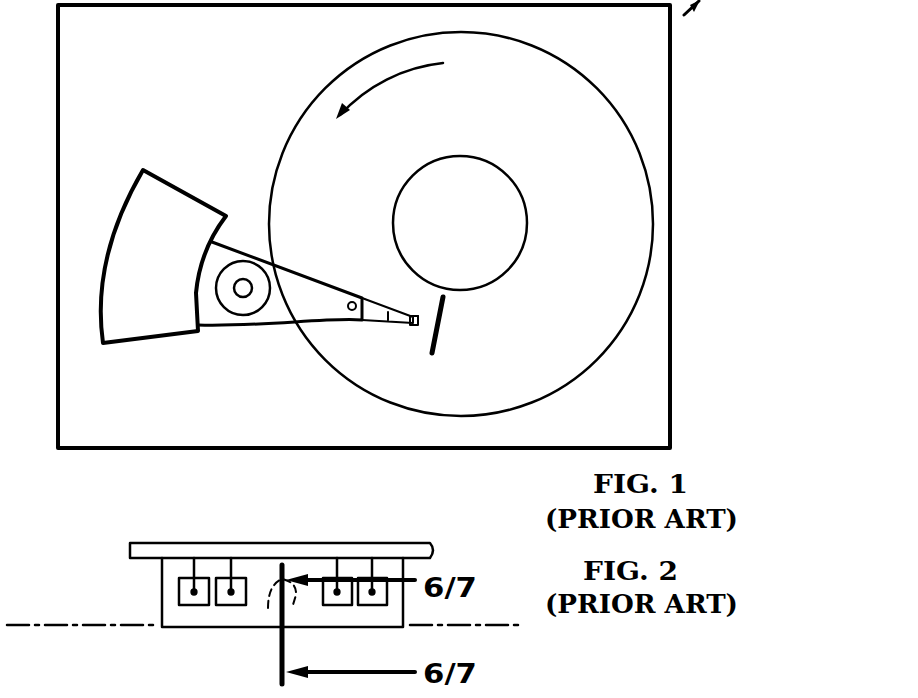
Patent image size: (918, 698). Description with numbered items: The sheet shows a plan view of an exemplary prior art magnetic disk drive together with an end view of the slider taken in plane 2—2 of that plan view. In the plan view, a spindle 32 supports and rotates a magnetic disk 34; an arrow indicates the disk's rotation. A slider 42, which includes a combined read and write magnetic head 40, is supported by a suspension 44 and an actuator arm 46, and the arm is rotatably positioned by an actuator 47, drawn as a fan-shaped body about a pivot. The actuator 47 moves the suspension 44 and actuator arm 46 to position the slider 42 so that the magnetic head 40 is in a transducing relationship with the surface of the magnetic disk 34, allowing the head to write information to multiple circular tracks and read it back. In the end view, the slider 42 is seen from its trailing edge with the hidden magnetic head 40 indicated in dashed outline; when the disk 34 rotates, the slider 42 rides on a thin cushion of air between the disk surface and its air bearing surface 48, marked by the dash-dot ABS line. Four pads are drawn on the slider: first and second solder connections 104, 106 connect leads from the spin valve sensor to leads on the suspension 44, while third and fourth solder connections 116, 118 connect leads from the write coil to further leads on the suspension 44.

In FIG. 1, the section line of FIG. 2 is at (456, 310).
In FIG. 1, the spindle 32 is at (483, 157).
In FIG. 1, the magnetic disk 34 is at (584, 223).
In FIG. 1, the magnetic head 40 is at (414, 326).
In FIG. 2, the magnetic head 40 is at (268, 608).
In FIG. 1, the slider 42 is at (413, 317).
In FIG. 2, the slider 42 is at (162, 587).
In FIG. 1, the suspension 44 is at (372, 321).
In FIG. 1, the actuator arm 46 is at (288, 267).
In FIG. 1, the actuator 47 is at (178, 183).
In FIG. 2, the air bearing surface 48 is at (52, 627).
In FIG. 2, the first solder connection 104 is at (180, 580).
In FIG. 2, the second solder connection 106 is at (352, 580).
In FIG. 2, the third solder connection 116 is at (211, 582).
In FIG. 2, the fourth solder connection 118 is at (319, 578).